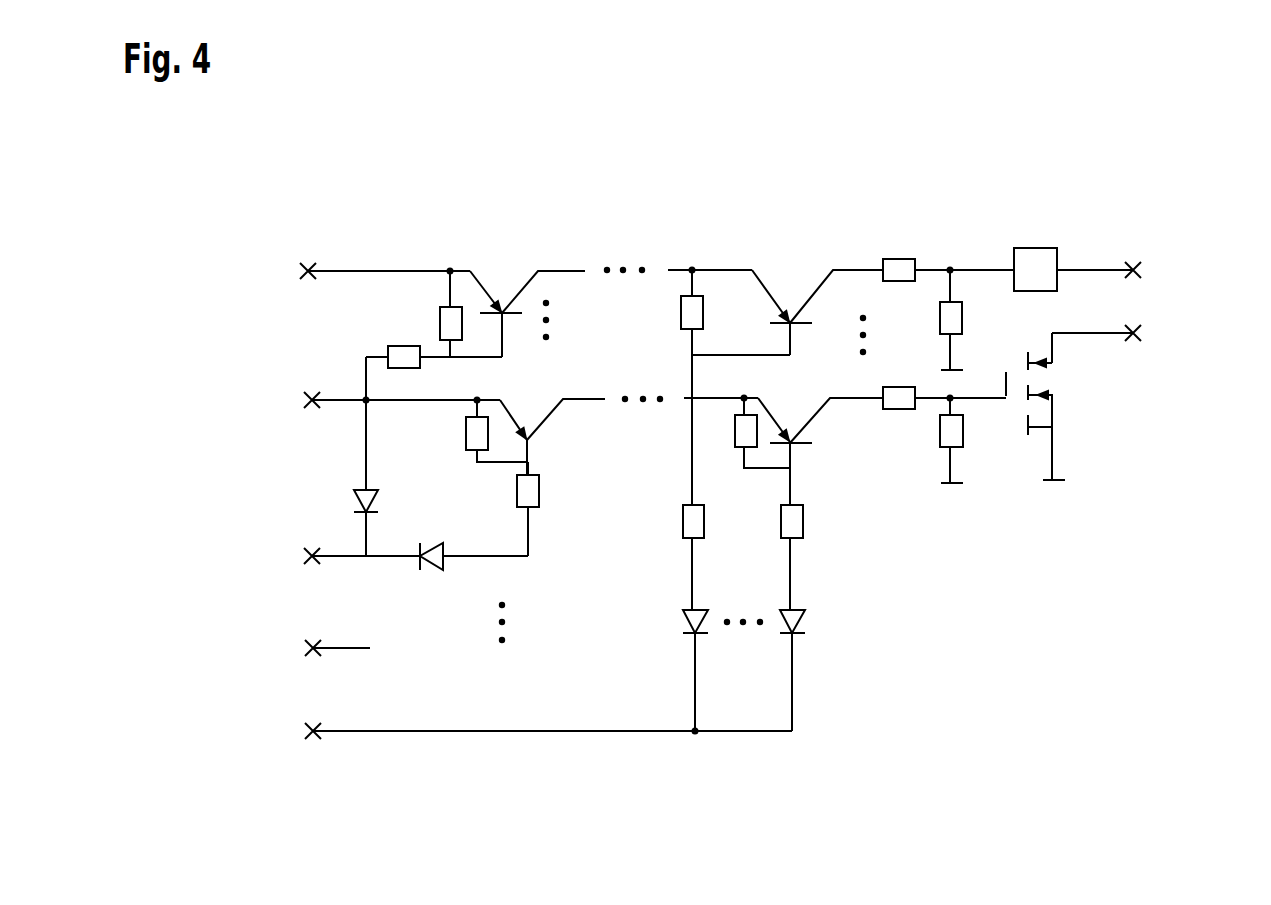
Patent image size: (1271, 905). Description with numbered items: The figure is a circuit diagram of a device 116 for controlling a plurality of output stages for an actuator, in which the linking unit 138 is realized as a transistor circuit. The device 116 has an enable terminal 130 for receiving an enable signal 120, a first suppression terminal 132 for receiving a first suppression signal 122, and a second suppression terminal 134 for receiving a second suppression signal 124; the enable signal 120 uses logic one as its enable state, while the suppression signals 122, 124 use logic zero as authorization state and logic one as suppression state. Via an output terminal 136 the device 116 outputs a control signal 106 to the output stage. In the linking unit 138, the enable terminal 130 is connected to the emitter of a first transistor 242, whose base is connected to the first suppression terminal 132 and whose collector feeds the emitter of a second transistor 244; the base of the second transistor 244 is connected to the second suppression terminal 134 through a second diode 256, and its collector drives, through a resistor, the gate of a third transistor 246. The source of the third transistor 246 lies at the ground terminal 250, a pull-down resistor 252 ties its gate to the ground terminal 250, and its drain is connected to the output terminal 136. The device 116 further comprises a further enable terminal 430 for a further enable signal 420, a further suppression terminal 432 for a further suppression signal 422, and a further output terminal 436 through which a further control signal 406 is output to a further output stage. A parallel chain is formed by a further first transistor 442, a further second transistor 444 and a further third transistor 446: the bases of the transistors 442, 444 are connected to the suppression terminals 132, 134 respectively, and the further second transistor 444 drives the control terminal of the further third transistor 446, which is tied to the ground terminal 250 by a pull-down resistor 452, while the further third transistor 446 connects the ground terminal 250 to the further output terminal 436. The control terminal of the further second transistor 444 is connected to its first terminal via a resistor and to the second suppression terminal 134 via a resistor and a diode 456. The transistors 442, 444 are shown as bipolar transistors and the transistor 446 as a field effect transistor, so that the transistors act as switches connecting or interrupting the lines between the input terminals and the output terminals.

The control signal 106 is at (1077, 270).
The device 116 is at (1095, 680).
The enable signal 120 is at (393, 270).
The first suppression signal 122 is at (366, 455).
The second suppression signal 124 is at (473, 732).
The enable terminal 130 is at (313, 260).
The first suppression terminal 132 is at (300, 554).
The second suppression terminal 134 is at (300, 730).
The output terminal 136 is at (1141, 266).
The linking unit 138 is at (668, 770).
The first transistor 242 is at (486, 282).
The second transistor 244 is at (773, 295).
The third transistor 246 is at (1037, 248).
The ground terminal 250 is at (953, 367).
The pull-down resistor 252 is at (947, 310).
The second diode 256 is at (682, 620).
The further control signal 406 is at (1095, 333).
The further enable signal 420 is at (393, 400).
The further suppression signal 422 is at (356, 648).
The further enable terminal 430 is at (300, 398).
The further suppression terminal 432 is at (300, 646).
The further output terminal 436 is at (1141, 330).
The further first transistor 442 is at (510, 410).
The further second transistor 444 is at (777, 425).
The further third transistor 446 is at (1033, 365).
The pull-down resistor 452 is at (963, 430).
The diode 456 is at (807, 620).